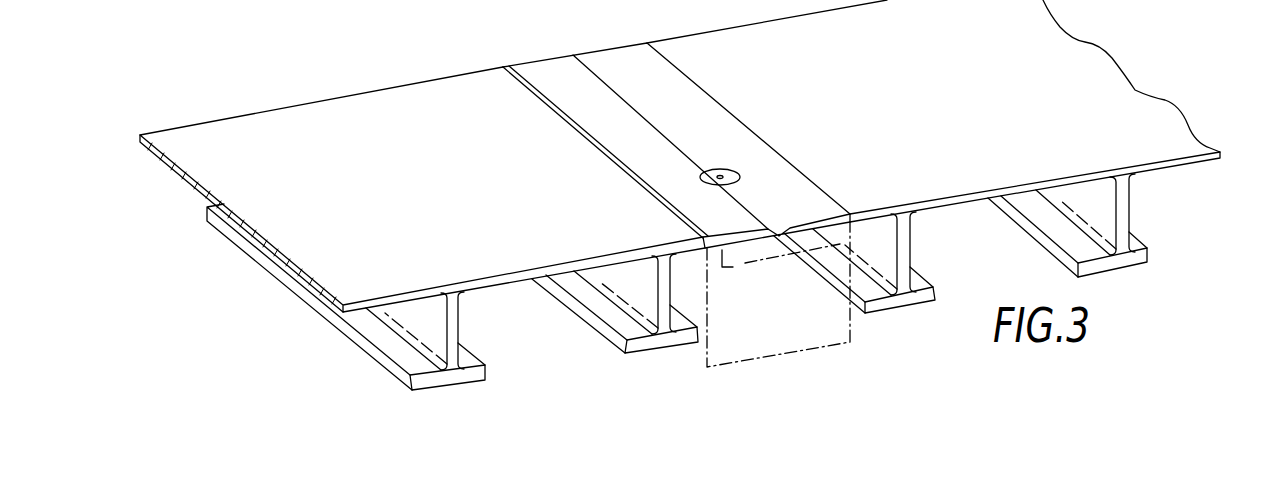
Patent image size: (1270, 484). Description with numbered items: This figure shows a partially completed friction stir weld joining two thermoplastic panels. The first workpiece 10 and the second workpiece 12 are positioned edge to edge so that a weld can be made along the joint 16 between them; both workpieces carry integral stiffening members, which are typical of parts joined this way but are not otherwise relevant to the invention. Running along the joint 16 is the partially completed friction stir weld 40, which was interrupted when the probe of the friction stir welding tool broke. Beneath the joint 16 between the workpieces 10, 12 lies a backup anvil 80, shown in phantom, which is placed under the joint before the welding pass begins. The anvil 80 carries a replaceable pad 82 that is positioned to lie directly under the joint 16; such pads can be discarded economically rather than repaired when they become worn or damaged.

The first workpiece 10 is at (404, 200).
The second workpiece 12 is at (940, 109).
The joint 16 is at (641, 116).
The partially completed friction stir weld 40 is at (755, 196).
The backup anvil 80 is at (850, 331).
The pad 82 is at (743, 253).